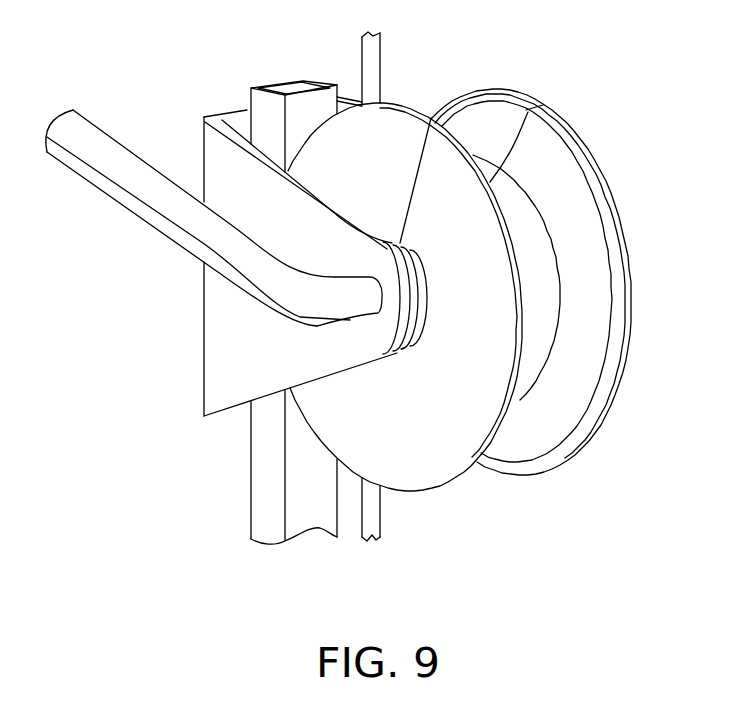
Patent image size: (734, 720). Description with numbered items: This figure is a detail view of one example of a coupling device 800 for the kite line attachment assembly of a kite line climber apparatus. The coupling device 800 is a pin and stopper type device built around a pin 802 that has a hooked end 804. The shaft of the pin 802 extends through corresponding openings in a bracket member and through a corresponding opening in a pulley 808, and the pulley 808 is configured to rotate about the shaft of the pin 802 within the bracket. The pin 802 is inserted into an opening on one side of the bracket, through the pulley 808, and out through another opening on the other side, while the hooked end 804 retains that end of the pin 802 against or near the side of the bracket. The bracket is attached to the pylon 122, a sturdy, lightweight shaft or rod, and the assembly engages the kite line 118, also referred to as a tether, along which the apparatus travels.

The coupling device 800 is at (148, 104).
The pin 802 is at (317, 325).
The hooked end 804 is at (118, 187).
The pulley 808 is at (626, 240).
The pylon 122 is at (262, 500).
The kite line 118 is at (382, 73).